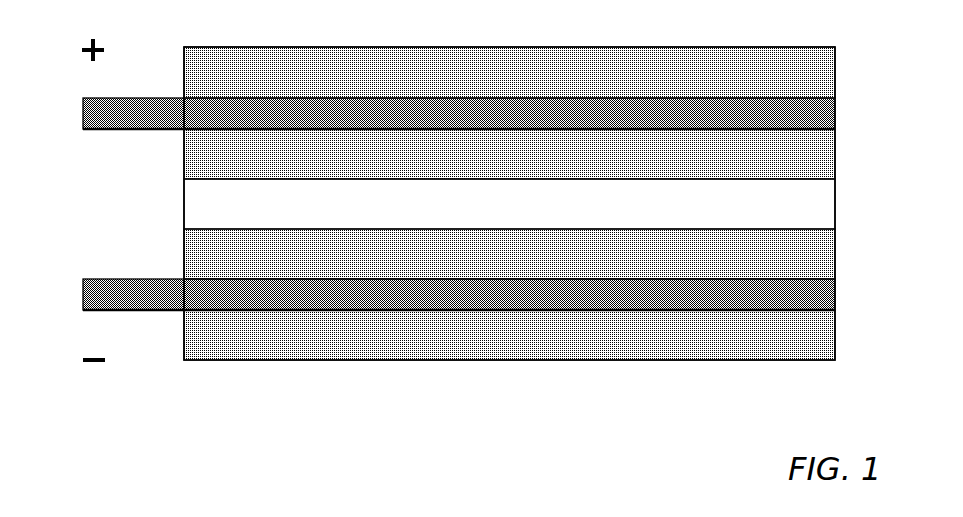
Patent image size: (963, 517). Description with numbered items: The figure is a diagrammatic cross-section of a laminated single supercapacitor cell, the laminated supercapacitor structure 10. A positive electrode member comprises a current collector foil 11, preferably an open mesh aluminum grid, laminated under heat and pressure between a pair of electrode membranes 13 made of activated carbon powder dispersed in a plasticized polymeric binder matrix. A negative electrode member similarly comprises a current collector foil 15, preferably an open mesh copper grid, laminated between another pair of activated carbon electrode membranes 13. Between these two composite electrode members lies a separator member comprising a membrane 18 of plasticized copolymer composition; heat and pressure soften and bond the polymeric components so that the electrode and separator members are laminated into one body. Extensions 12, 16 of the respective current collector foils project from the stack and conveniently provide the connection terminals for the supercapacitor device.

The laminated supercapacitor structure 10 is at (508, 412).
The current collector foil 11 is at (828, 113).
The extension 12 is at (85, 112).
The electrode membrane 13 is at (829, 76).
The current collector foil 15 is at (828, 298).
The extension 16 is at (86, 297).
The membrane 18 is at (830, 206).